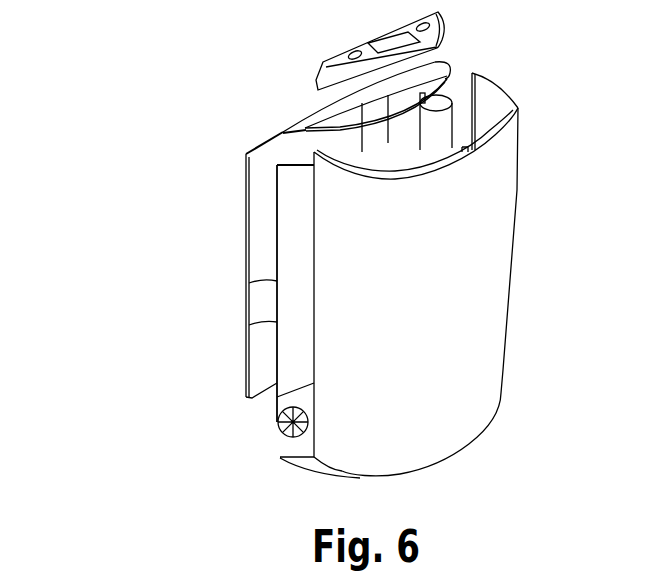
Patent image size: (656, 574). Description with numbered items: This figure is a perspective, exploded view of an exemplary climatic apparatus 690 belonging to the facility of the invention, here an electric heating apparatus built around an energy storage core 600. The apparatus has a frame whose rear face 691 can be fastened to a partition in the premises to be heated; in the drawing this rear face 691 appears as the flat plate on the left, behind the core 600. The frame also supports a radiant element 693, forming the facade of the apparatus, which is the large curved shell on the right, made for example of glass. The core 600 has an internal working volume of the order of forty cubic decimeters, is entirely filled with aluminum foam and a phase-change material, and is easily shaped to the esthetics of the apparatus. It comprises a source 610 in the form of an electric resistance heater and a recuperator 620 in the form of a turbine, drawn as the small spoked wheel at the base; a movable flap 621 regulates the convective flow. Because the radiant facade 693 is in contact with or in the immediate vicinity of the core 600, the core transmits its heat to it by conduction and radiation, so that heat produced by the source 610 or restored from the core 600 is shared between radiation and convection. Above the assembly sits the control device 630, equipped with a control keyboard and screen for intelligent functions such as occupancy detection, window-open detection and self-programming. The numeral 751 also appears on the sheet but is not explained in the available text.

The climatic apparatus 690 is at (170, 106).
The rear face 691 is at (246, 199).
The energy storage core 600 is at (287, 343).
The recuperator 620 is at (284, 433).
The movable flap 621 is at (306, 128).
The control device 630 is at (358, 44).
The source 610 is at (458, 73).
The radiant element 693 is at (440, 292).
The reference element 751 is at (636, 572).